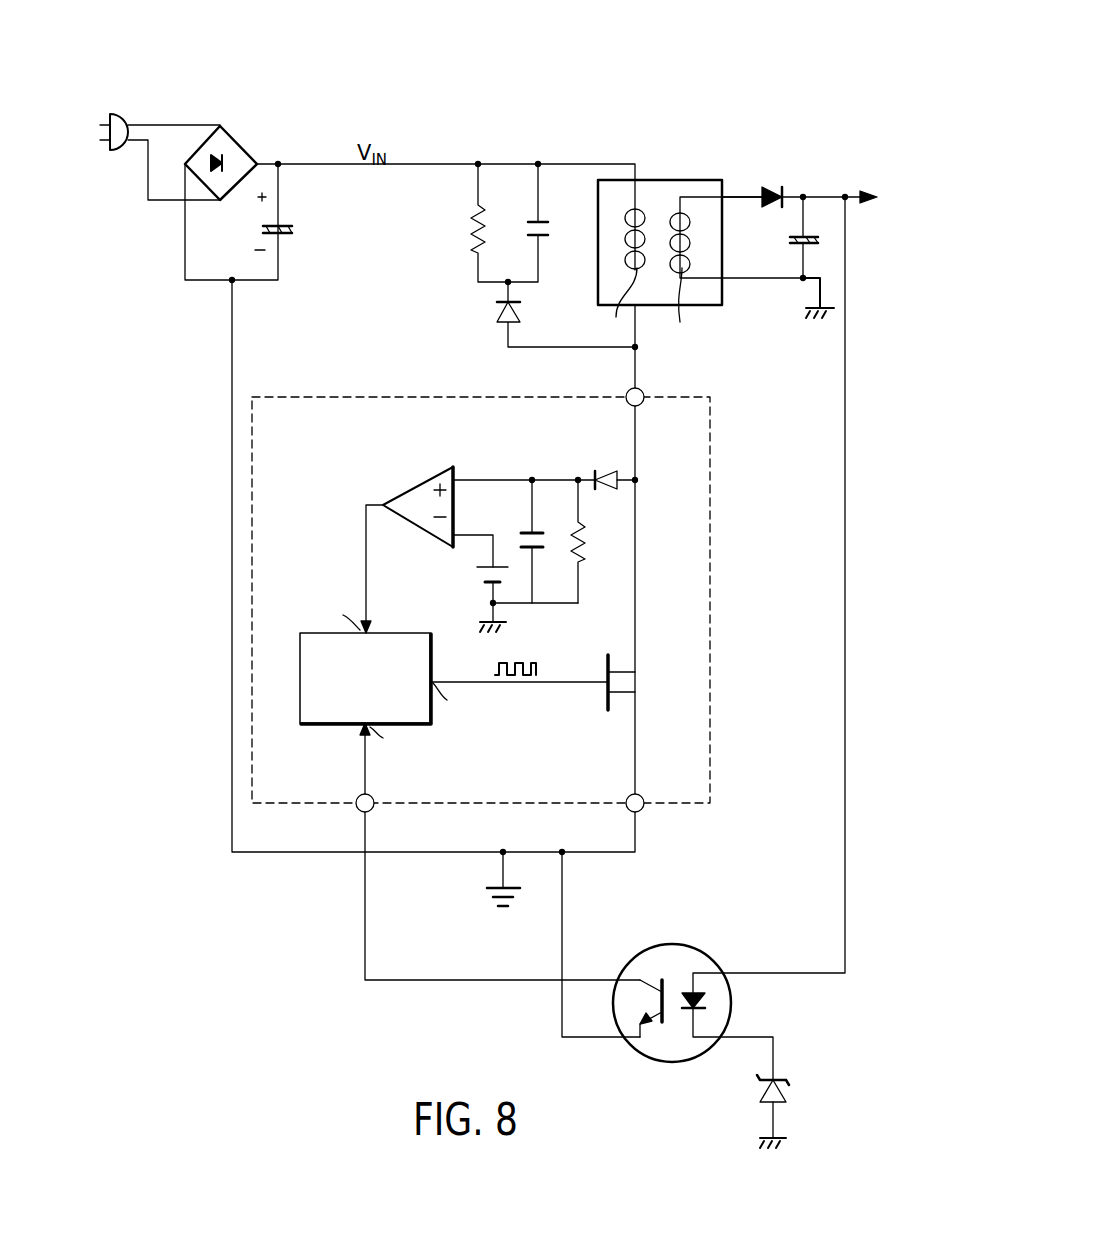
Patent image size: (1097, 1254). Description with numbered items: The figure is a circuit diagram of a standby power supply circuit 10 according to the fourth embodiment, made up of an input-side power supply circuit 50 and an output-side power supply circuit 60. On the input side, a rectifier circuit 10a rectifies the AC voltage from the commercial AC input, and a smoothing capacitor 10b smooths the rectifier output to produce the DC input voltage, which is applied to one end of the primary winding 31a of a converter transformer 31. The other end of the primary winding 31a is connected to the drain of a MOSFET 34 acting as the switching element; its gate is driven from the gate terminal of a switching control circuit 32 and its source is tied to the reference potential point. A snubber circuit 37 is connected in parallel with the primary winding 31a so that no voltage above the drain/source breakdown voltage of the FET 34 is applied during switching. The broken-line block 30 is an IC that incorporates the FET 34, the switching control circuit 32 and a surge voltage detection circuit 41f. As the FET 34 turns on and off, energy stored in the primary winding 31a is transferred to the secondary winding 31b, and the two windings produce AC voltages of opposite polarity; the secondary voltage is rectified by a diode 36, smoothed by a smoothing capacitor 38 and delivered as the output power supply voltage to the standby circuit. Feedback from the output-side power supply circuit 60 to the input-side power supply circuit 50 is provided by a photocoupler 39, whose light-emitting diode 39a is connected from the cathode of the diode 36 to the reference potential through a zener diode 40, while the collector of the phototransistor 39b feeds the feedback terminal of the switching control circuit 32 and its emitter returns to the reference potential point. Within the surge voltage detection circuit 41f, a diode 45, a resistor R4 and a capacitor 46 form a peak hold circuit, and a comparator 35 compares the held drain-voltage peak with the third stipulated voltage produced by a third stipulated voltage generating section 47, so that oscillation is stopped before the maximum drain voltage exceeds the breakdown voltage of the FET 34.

The standby power supply circuit 10 is at (440, 87).
The rectifier circuit 10a is at (238, 143).
The smoothing capacitor 10b is at (298, 230).
The IC 30 is at (710, 748).
The converter transformer 31 is at (660, 190).
The primary winding 31a is at (609, 306).
The secondary winding 31b is at (683, 310).
The switching control circuit 32 is at (297, 705).
The MOSFET (FET) 34 is at (628, 695).
The comparator 35 is at (427, 480).
The diode 36 is at (783, 190).
The snubber circuit 37 is at (500, 140).
The smoothing capacitor 38 is at (787, 238).
The photocoupler 39 is at (698, 953).
The light-emitting diode 39a is at (710, 998).
The phototransistor 39b is at (635, 998).
The zener diode 40 is at (753, 1093).
The surge voltage detection circuit 41f is at (484, 468).
The diode 45 is at (609, 471).
The capacitor 46 is at (546, 562).
The third stipulated voltage generating section 47 is at (477, 577).
The input-side power supply circuit 50 is at (600, 130).
The output-side power supply circuit 60 is at (796, 94).
The resistor R4 is at (590, 541).